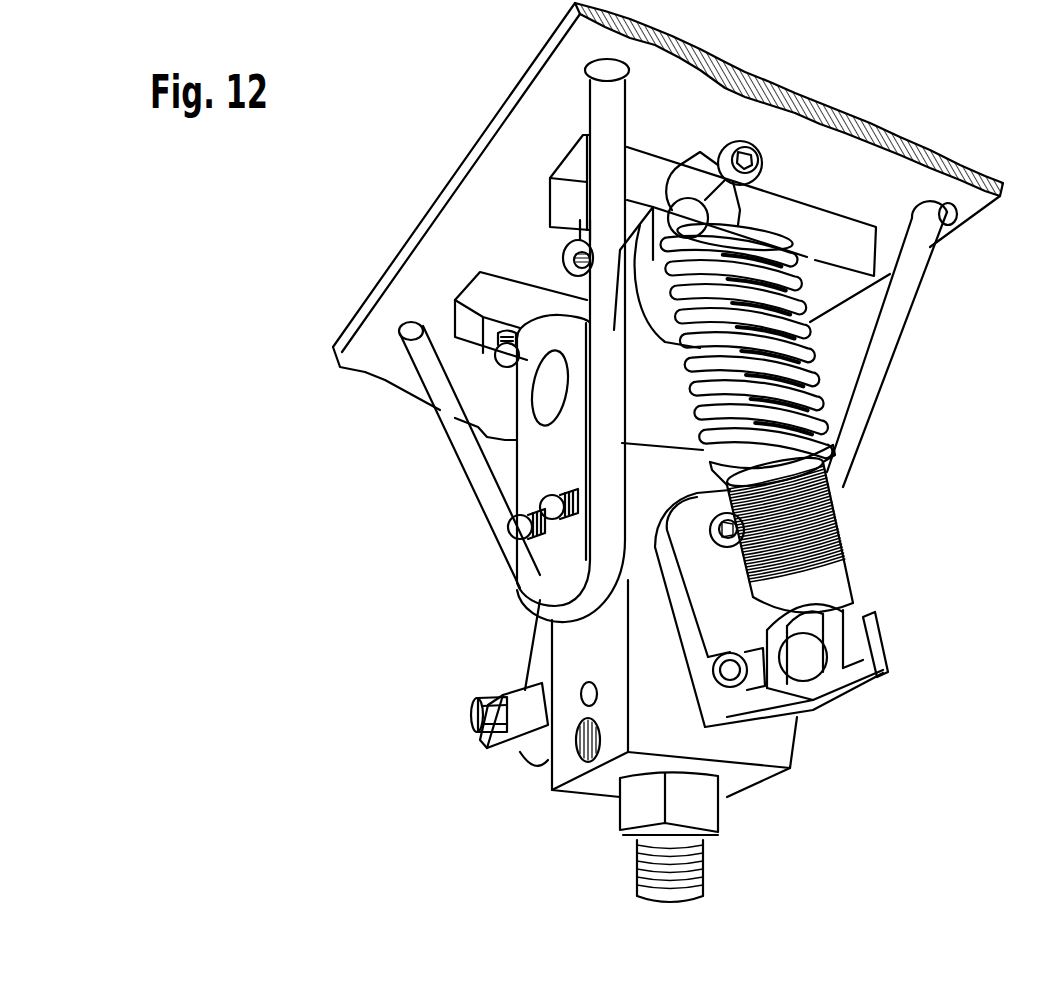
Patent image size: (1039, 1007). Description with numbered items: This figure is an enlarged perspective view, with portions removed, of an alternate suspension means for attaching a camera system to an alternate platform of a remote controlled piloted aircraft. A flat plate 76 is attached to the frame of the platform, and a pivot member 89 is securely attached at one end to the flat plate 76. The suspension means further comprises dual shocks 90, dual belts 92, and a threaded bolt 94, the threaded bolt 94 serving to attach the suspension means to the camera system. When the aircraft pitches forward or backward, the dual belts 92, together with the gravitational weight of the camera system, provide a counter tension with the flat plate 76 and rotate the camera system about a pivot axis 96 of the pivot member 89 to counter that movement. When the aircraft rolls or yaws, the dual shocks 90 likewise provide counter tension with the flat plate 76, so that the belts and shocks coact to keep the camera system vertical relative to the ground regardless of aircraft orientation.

The flat plate 76 is at (880, 173).
The pivot member 89 is at (540, 463).
The dual shocks 90 is at (823, 447).
The dual belts 92 is at (470, 445).
The threaded bolt 94 is at (710, 873).
The pivot axis 96 is at (745, 155).